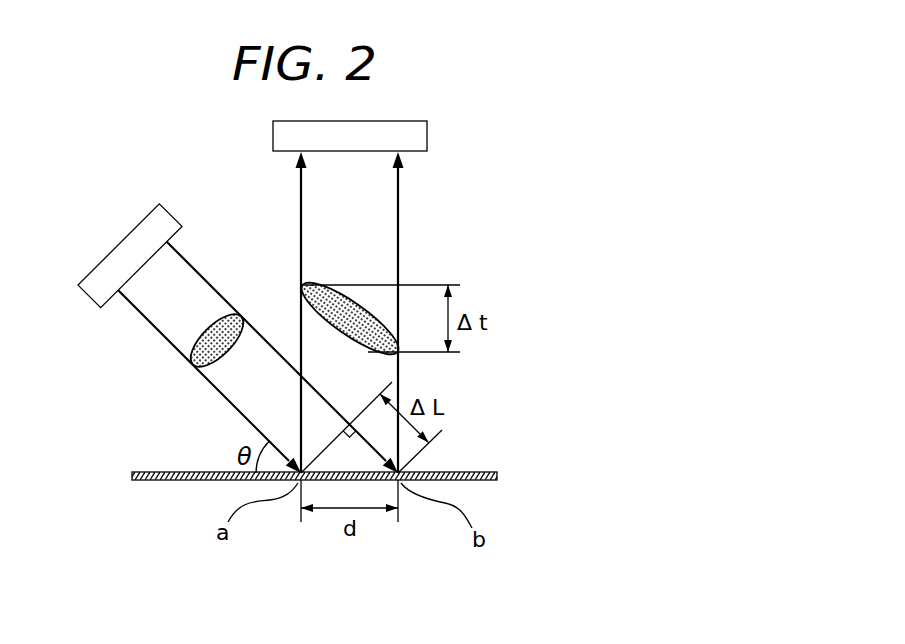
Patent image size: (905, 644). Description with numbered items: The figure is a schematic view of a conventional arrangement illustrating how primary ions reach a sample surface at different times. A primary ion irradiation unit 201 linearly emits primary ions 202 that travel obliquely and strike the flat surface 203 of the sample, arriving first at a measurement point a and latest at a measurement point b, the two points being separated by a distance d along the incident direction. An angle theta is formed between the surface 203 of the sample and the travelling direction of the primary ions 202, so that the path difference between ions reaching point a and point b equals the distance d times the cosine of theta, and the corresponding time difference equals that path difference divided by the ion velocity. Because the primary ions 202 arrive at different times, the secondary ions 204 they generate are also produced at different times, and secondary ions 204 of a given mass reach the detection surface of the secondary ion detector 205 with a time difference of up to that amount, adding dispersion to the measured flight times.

The primary ion irradiation unit 201 is at (121, 242).
The primary ions 202 is at (190, 366).
The surface of the sample 203 is at (497, 478).
The secondary ions 204 is at (300, 286).
The secondary ion detector 205 is at (427, 133).